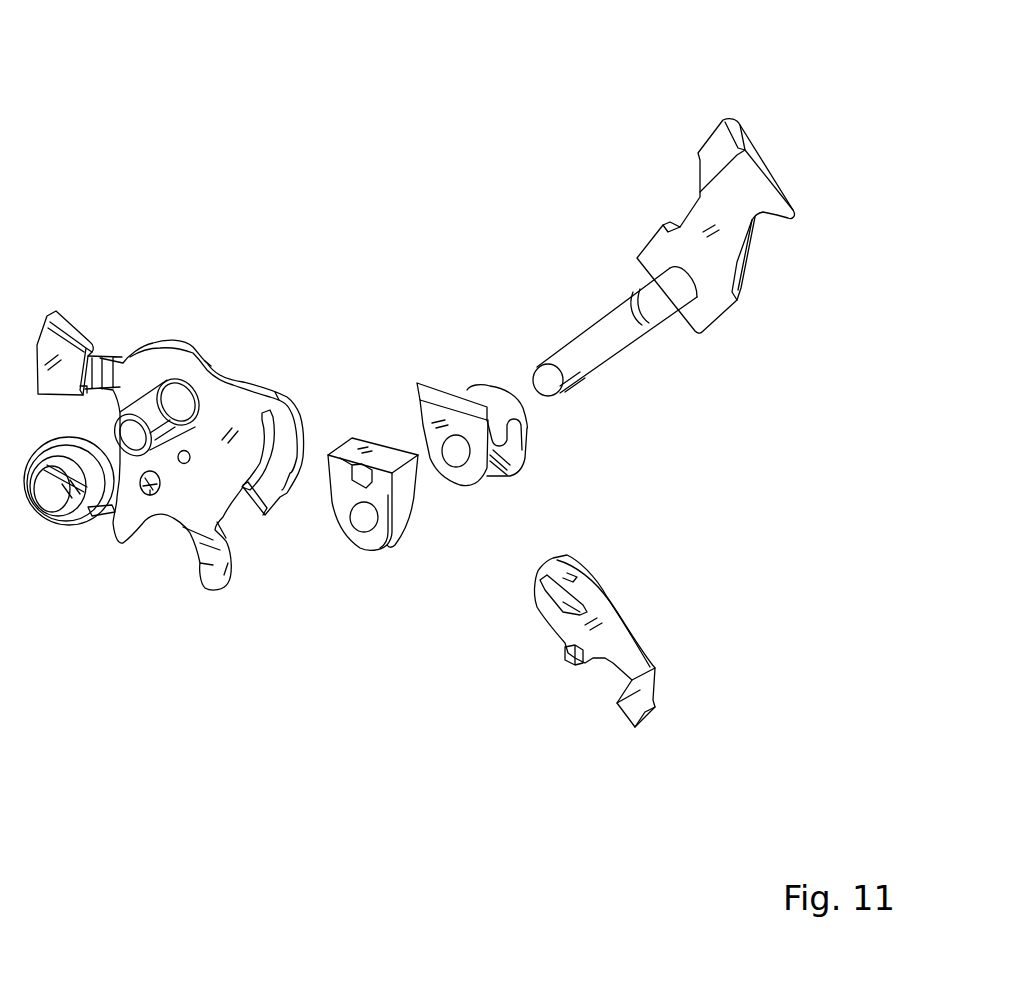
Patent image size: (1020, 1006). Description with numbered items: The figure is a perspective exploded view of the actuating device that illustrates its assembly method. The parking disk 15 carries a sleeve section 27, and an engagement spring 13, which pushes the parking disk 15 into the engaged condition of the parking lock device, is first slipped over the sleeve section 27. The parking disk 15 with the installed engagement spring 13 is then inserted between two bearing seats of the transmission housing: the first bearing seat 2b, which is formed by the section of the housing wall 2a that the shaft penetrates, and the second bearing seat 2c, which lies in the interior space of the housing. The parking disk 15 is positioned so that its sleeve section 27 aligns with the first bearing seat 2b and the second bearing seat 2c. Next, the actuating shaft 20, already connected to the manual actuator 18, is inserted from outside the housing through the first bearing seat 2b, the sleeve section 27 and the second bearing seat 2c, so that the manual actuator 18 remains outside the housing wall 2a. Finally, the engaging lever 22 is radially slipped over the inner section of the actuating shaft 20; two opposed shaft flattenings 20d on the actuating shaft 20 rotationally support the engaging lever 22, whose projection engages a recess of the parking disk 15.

The parking disk 15 is at (222, 413).
The sleeve section 27 is at (157, 413).
The engagement spring 13 is at (43, 520).
The second bearing seat 2c is at (370, 533).
The housing wall 2a is at (527, 473).
The first bearing seat 2b is at (460, 465).
The manual actuator 18 is at (750, 187).
The actuating shaft 20 is at (572, 357).
The shaft flattenings 20d is at (637, 300).
The engaging lever 22 is at (603, 632).